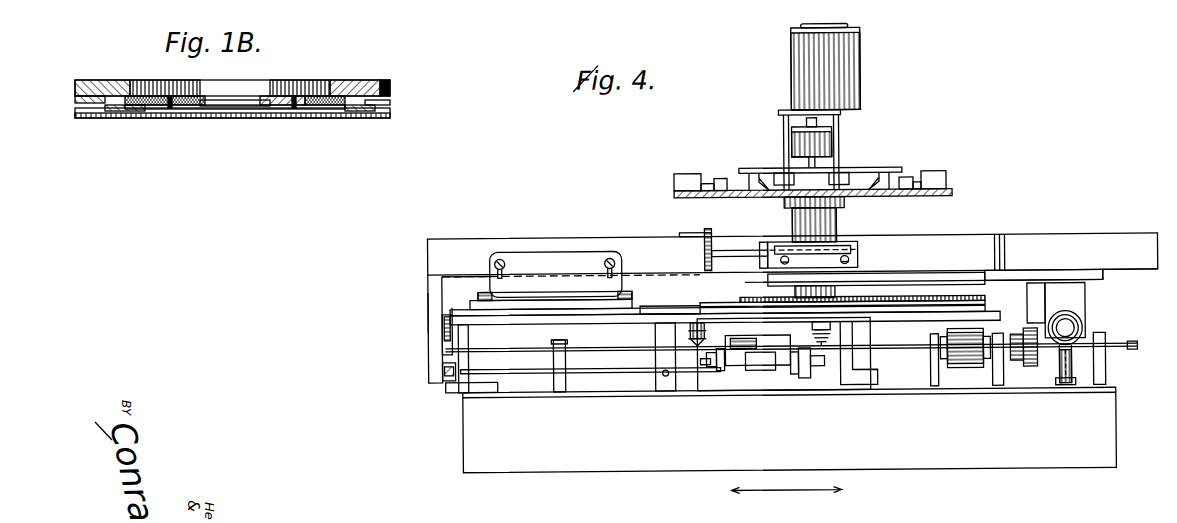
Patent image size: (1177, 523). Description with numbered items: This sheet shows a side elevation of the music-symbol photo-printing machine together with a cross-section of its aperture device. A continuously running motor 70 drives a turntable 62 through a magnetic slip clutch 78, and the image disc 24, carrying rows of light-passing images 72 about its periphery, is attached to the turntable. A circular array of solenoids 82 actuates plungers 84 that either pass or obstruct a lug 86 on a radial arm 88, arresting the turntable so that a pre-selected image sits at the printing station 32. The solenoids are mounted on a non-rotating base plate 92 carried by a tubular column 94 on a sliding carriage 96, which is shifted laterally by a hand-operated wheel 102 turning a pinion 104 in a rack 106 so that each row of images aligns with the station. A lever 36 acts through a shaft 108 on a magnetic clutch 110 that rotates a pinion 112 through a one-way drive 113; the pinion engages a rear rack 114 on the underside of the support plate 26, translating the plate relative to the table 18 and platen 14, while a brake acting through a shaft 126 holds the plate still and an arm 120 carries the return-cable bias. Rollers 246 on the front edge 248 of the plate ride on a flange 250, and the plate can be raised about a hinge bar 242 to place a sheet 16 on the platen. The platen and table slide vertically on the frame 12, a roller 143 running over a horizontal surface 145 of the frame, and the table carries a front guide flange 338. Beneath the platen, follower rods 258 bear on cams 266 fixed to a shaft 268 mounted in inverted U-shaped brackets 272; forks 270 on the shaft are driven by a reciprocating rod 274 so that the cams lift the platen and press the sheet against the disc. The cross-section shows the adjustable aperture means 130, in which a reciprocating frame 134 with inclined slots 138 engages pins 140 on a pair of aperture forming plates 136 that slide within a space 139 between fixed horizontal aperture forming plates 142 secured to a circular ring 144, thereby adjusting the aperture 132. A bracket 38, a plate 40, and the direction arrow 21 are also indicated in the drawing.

In FIG. 1B, the adjustable aperture means 130 is at (120, 72).
In FIG. 1B, the space 139 is at (78, 90).
In FIG. 1B, the inclined slots 138 is at (170, 82).
In FIG. 1B, the reciprocating frame 134 is at (278, 95).
In FIG. 1B, the printing station 32 is at (308, 78).
In FIG. 1B, the circular ring 144 is at (365, 80).
In FIG. 1B, the fixed horizontal aperture forming plates 142 is at (98, 118).
In FIG. 1B, the aperture forming plates 136 is at (125, 110).
In FIG. 1B, the pins 140 is at (170, 106).
In FIG. 1B, the aperture 132 is at (234, 110).
In FIG. 4, the motor 70 is at (852, 72).
In FIG. 4, the magnetic slip clutch 78 is at (797, 140).
In FIG. 4, the solenoids 82 is at (688, 172).
In FIG. 4, the plungers 84 is at (728, 178).
In FIG. 4, the lug 86 is at (920, 162).
In FIG. 4, the radial arm 88 is at (850, 168).
In FIG. 4, the base plate 92 is at (953, 192).
In FIG. 4, the tubular column 94 is at (835, 226).
In FIG. 4, the sliding carriage 96 is at (860, 262).
In FIG. 4, the hand-operated wheel 102 is at (706, 246).
In FIG. 4, the pinion 104 is at (764, 244).
In FIG. 4, the rack 106 is at (765, 258).
In FIG. 4, the turntable 62 is at (915, 282).
In FIG. 4, the support plate 26 is at (983, 282).
In FIG. 4, the disc 24 is at (905, 300).
In FIG. 4, the light-passing images 72 is at (872, 306).
In FIG. 4, the sheet 16 is at (885, 306).
In FIG. 4, the bracket 38 is at (558, 240).
In FIG. 4, the plate 40 is at (585, 310).
In FIG. 4, the table 18 is at (541, 316).
In FIG. 4, the platen 14 is at (638, 312).
In FIG. 4, the direction arrow 21 is at (714, 295).
In FIG. 4, the shaft 126 is at (688, 330).
In FIG. 4, the shaft 108 is at (640, 348).
In FIG. 4, the horizontal surface 145 is at (652, 382).
In FIG. 4, the roller 143 is at (662, 392).
In FIG. 4, the follower rods 258 is at (832, 322).
In FIG. 4, the rod 274 is at (757, 350).
In FIG. 4, the forks 270 is at (772, 359).
In FIG. 4, the inverted U-shaped brackets 272 is at (717, 386).
In FIG. 4, the shaft 268 is at (780, 378).
In FIG. 4, the cams 266 is at (827, 366).
In FIG. 4, the rear rack 114 is at (1028, 312).
In FIG. 4, the hinge bar 242 is at (1072, 328).
In FIG. 4, the magnetic clutch 110 is at (958, 372).
In FIG. 4, the pinion 112 is at (1030, 370).
In FIG. 4, the one-way drive 113 is at (1018, 364).
In FIG. 4, the arm 120 is at (1076, 388).
In FIG. 4, the frame 12 is at (490, 470).
In FIG. 4, the flange 250 is at (452, 388).
In FIG. 4, the lever 36 is at (442, 325).
In FIG. 4, the rollers 246 is at (442, 370).
In FIG. 4, the front edge 248 is at (428, 307).
In FIG. 4, the front guide flange 338 is at (452, 312).